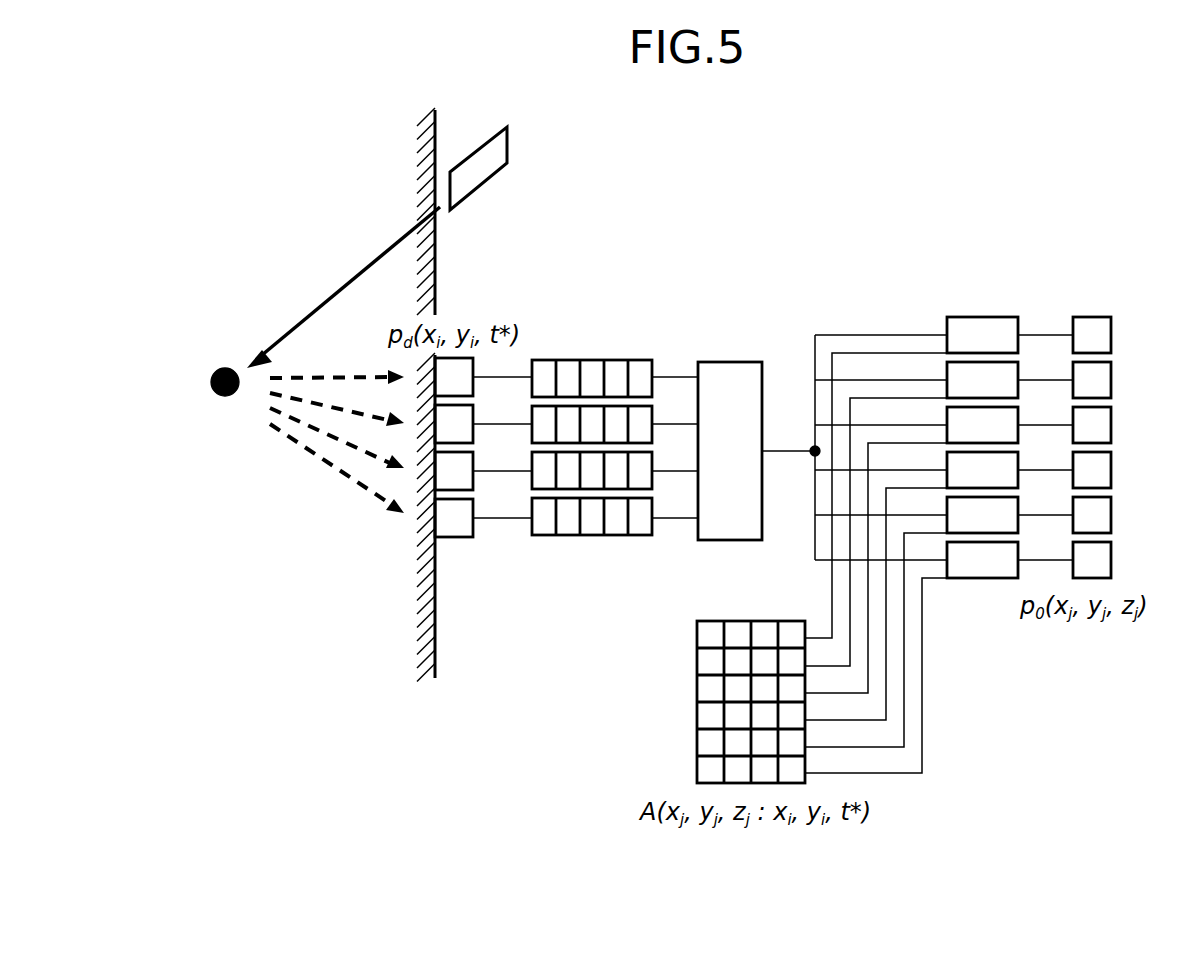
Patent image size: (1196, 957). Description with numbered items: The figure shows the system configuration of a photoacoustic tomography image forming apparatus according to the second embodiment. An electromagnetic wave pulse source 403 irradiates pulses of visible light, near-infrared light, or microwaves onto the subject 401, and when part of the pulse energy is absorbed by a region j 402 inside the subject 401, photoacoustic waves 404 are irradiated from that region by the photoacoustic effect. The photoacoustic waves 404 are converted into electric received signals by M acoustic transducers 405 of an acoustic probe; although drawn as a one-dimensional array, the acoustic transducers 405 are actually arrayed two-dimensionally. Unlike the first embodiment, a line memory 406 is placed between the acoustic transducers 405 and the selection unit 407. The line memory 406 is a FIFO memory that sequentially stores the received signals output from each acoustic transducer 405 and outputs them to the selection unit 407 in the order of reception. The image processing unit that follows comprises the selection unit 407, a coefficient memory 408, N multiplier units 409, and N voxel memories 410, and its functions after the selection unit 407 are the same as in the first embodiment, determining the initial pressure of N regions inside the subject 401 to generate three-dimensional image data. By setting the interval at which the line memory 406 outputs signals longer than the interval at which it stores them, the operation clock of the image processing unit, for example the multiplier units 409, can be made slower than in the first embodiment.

The subject 401 is at (345, 165).
The region j 402 is at (226, 368).
The electromagnetic wave pulse source 403 is at (507, 145).
The photoacoustic waves 404 is at (298, 447).
The acoustic transducers 405 is at (455, 538).
The line memory 406 is at (592, 360).
The selection unit 407 is at (732, 362).
The coefficient memory 408 is at (697, 695).
The multiplier units 409 is at (972, 317).
The voxel memories 410 is at (1090, 317).